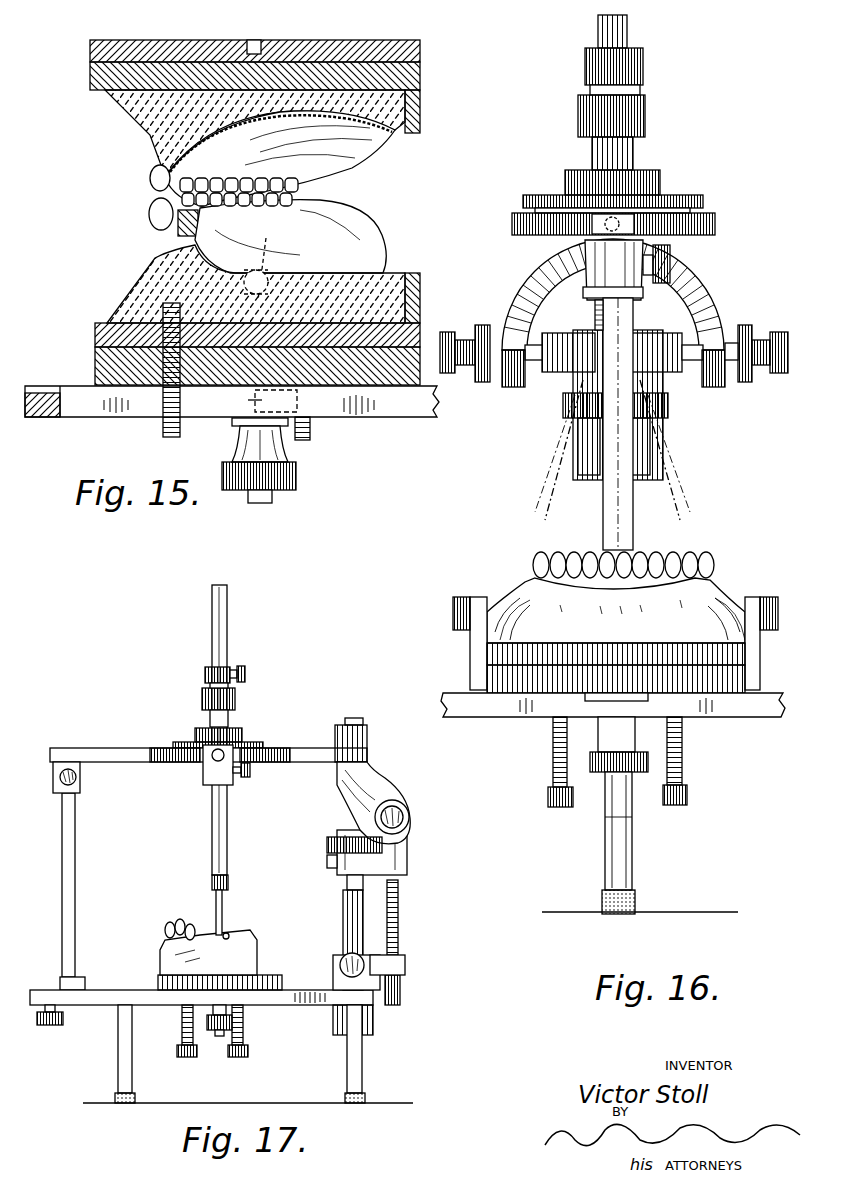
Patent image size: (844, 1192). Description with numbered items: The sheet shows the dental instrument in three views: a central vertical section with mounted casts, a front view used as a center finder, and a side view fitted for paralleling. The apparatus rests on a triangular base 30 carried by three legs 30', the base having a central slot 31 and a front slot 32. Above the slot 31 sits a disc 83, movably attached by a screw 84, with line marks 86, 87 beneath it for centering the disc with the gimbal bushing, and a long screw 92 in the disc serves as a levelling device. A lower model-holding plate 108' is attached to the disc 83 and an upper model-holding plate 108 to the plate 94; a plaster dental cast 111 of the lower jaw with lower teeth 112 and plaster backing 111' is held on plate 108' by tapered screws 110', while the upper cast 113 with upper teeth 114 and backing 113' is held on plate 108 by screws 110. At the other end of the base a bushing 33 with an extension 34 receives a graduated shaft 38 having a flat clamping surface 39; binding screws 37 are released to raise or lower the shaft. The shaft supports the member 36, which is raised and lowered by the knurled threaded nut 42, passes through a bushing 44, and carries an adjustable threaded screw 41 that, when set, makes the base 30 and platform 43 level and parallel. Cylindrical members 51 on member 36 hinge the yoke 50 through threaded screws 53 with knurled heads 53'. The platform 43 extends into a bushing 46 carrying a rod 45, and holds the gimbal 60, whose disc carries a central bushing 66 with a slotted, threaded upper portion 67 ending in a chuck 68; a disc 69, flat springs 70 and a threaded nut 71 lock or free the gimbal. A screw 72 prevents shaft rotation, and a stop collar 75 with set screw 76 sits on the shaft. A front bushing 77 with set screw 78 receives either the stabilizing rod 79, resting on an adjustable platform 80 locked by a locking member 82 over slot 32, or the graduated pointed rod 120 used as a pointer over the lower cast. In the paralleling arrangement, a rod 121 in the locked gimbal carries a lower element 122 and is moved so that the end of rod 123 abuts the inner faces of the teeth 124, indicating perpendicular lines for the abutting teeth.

In FIG. 15, the plate 94 is at (420, 51).
In FIG. 15, the upper model-holding plate 108 is at (280, 76).
In FIG. 15, the plaster of Paris backing 113' is at (440, 111).
In FIG. 15, the plaster dental cast of an upper jaw 113 is at (262, 133).
In FIG. 15, the model-setting tapered screws 110 is at (280, 158).
In FIG. 15, the upper teeth 114 is at (150, 187).
In FIG. 15, the lower teeth 112 is at (232, 208).
In FIG. 16, the lower teeth 112 is at (540, 559).
In FIG. 15, the plaster dental cast of a lower jaw 111 is at (309, 230).
In FIG. 16, the plaster dental cast of a lower jaw 111 is at (625, 583).
In FIG. 15, the model-setting tapered screws 110' is at (284, 268).
In FIG. 16, the model-setting tapered screws 110' is at (604, 623).
In FIG. 15, the plaster of Paris backing 111' is at (233, 284).
In FIG. 16, the plaster of Paris backing 111' is at (605, 601).
In FIG. 15, the lower model-holding plate 108' is at (221, 335).
In FIG. 16, the lower model-holding plate 108' is at (580, 653).
In FIG. 15, the disc 83 is at (95, 371).
In FIG. 16, the disc 83 is at (487, 679).
In FIG. 17, the disc 83 is at (158, 984).
In FIG. 15, the triangular base 30 is at (232, 421).
In FIG. 16, the triangular base 30 is at (613, 719).
In FIG. 17, the triangular base 30 is at (201, 1013).
In FIG. 15, the slot 31 is at (80, 412).
In FIG. 15, the long screw 92 is at (163, 433).
In FIG. 16, the long screw 92 is at (552, 798).
In FIG. 17, the long screw 92 is at (240, 1058).
In FIG. 15, the line mark 86 is at (236, 401).
In FIG. 15, the line mark 87 is at (277, 401).
In FIG. 15, the screw 84 is at (266, 504).
In FIG. 17, the screw 84 is at (218, 1036).
In FIG. 16, the graduated pointed rod 120 is at (615, 36).
In FIG. 16, the stop collar 75 is at (643, 68).
In FIG. 17, the stop collar 75 is at (205, 677).
In FIG. 16, the chuck 68 is at (645, 122).
In FIG. 16, the upper portion of bushing 67 is at (633, 147).
In FIG. 16, the threaded nut 71 is at (660, 186).
In FIG. 17, the threaded nut 71 is at (196, 735).
In FIG. 16, the disc 69 is at (703, 201).
In FIG. 17, the disc 69 is at (175, 745).
In FIG. 16, the flat springs 70 is at (700, 210).
In FIG. 16, the platform 43 is at (715, 229).
In FIG. 16, the yoke 50 is at (712, 287).
In FIG. 17, the yoke 50 is at (380, 782).
In FIG. 16, the bushing 77 is at (590, 255).
In FIG. 17, the bushing 77 is at (78, 790).
In FIG. 16, the set screw 78 is at (670, 262).
In FIG. 17, the set screw 78 is at (80, 778).
In FIG. 16, the adjustable threaded screw 41 is at (643, 293).
In FIG. 16, the graduated shaft 38 is at (633, 317).
In FIG. 17, the graduated shaft 38 is at (352, 922).
In FIG. 16, the member 36 is at (660, 380).
In FIG. 17, the member 36 is at (407, 847).
In FIG. 16, the cylindrical members 51 is at (566, 334).
In FIG. 16, the threaded screw 53 is at (619, 363).
In FIG. 16, the knurled terminal head 53' is at (629, 342).
In FIG. 16, the knurled threaded nut 42 is at (668, 410).
In FIG. 17, the knurled threaded nut 42 is at (327, 846).
In FIG. 16, the bushing 44 is at (640, 467).
In FIG. 17, the bushing 44 is at (347, 878).
In FIG. 16, the slot 32 is at (618, 700).
In FIG. 16, the legs 30' is at (640, 815).
In FIG. 17, the legs 30' is at (248, 1054).
In FIG. 17, the rod 121 is at (227, 634).
In FIG. 17, the set screw 76 is at (247, 678).
In FIG. 17, the gimbal 60 is at (258, 736).
In FIG. 17, the bushing 66 is at (205, 778).
In FIG. 17, the screw 72 is at (250, 773).
In FIG. 17, the stabilizing graduated rod 79 is at (75, 861).
In FIG. 17, the adjustable platform 80 is at (62, 985).
In FIG. 17, the locking member 82 is at (51, 1027).
In FIG. 17, the rod 45 is at (357, 710).
In FIG. 17, the bushing 46 is at (367, 738).
In FIG. 17, the flat surface 39 is at (398, 947).
In FIG. 17, the screws 37 is at (343, 965).
In FIG. 17, the bushing 33 is at (340, 980).
In FIG. 17, the extension 34 is at (405, 969).
In FIG. 17, the collar 122 is at (212, 884).
In FIG. 17, the rod 123 is at (222, 913).
In FIG. 17, the teeth 124 is at (180, 933).